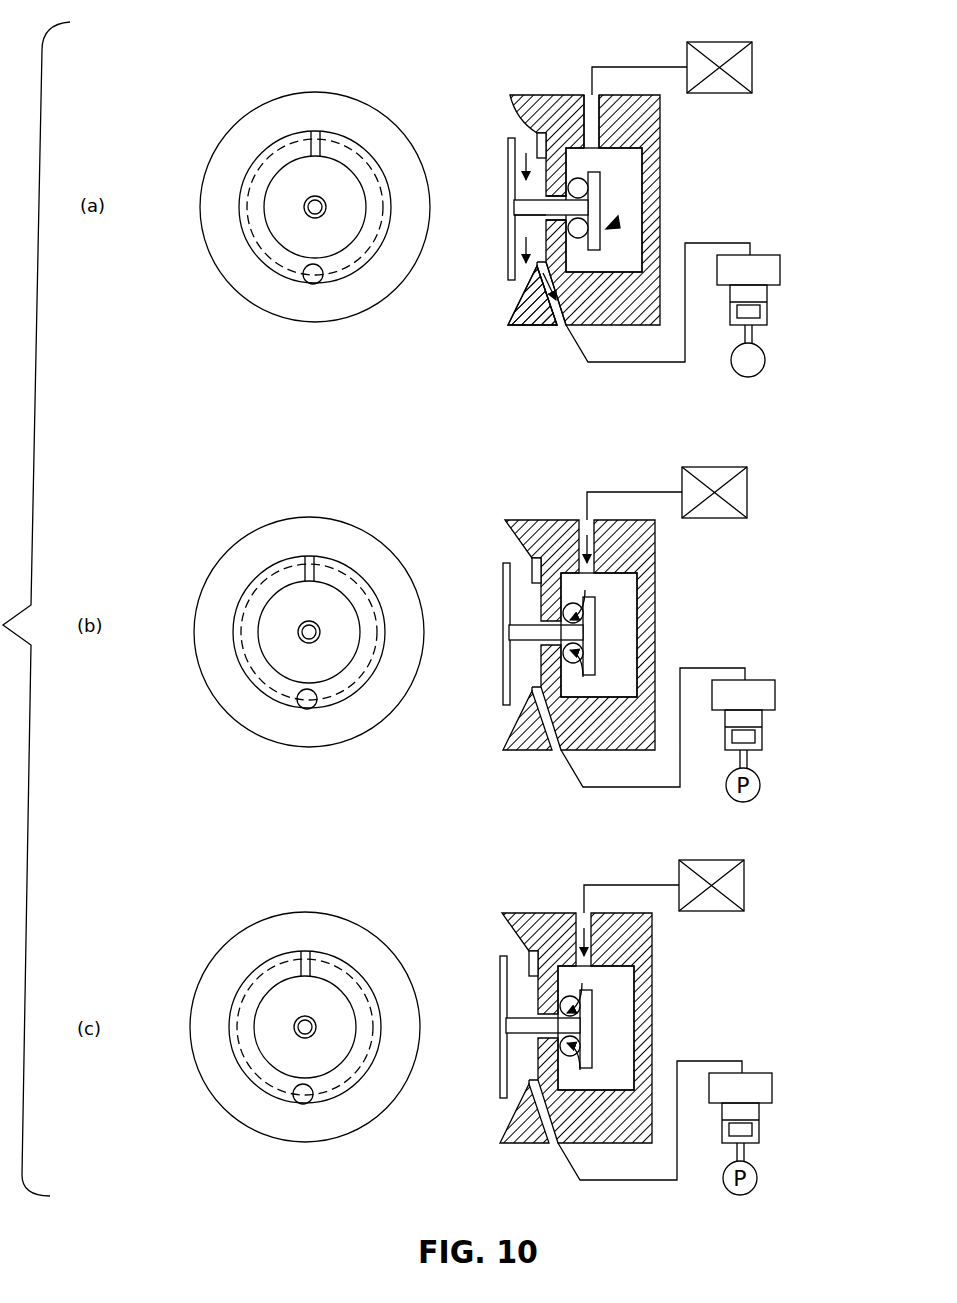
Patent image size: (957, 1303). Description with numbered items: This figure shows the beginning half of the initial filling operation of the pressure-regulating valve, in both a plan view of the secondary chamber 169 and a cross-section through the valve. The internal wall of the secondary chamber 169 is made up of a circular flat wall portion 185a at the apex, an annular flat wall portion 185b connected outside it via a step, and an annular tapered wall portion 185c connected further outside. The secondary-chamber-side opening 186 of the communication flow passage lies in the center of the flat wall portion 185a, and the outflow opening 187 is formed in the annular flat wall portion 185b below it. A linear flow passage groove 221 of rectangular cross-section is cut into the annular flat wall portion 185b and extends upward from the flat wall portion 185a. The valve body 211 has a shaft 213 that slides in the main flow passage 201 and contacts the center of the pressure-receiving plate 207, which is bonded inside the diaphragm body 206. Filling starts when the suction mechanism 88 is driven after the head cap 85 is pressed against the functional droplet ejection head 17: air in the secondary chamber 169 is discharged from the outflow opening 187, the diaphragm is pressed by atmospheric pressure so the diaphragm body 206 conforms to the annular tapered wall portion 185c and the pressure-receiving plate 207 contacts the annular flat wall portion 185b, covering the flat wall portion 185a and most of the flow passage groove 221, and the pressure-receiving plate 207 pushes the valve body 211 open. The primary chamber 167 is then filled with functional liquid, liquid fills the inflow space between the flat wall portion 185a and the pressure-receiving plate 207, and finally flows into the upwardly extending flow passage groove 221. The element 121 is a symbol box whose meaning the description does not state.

The flow passage groove 221 is at (315, 131).
The flat wall portion 185a is at (303, 173).
The annular flat wall portion 185b is at (348, 140).
The annular tapered wall portion 185c is at (393, 140).
The secondary-chamber-side opening 186 is at (307, 203).
The main flow passage 201 is at (605, 207).
The shaft 213 is at (305, 208).
The pressure-receiving plate 207 is at (250, 250).
The outflow opening 187 is at (303, 282).
The diaphragm body 206 is at (522, 128).
The secondary chamber 169 is at (522, 226).
The primary chamber 167 is at (622, 163).
The valve body 211 is at (620, 223).
The ink tank 121 is at (752, 67).
The functional droplet ejection head 17 is at (765, 293).
The head cap 85 is at (765, 313).
The suction mechanism 88 is at (765, 360).